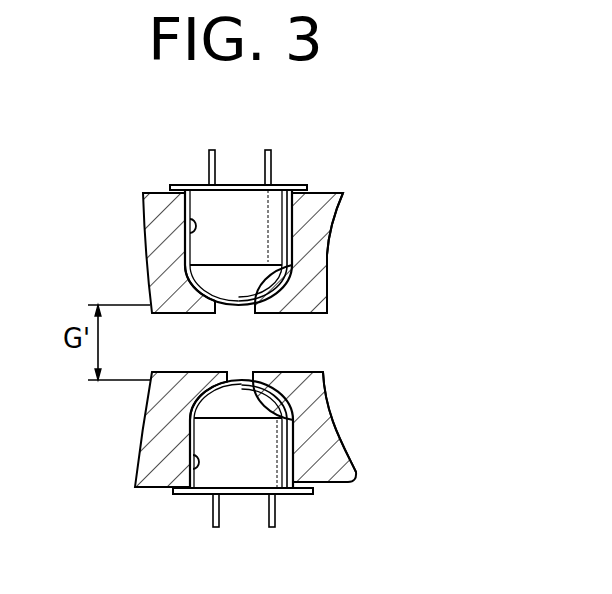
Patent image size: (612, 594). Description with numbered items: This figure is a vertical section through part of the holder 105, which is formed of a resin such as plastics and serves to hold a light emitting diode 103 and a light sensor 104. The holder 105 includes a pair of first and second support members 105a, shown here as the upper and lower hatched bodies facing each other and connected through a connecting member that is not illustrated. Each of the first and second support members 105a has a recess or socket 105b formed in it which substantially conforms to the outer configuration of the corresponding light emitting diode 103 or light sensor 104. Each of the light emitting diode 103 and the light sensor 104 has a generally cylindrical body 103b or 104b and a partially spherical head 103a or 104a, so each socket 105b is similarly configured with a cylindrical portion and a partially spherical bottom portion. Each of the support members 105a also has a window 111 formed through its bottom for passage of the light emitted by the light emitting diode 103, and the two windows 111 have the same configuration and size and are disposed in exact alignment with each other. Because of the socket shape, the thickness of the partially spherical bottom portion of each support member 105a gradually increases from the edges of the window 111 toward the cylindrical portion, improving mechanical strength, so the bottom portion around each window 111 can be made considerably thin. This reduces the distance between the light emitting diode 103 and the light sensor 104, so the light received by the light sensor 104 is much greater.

The light emitting diode 103 is at (288, 183).
The partially spherical head 103a is at (263, 283).
The generally cylindrical body 103b is at (272, 212).
The light sensor 104 is at (197, 497).
The partially spherical head 104a is at (215, 402).
The generally cylindrical body 104b is at (282, 434).
The holder 105 is at (356, 170).
The first and second support members 105a is at (325, 250).
The recess or socket 105b is at (184, 240).
The window 111 is at (228, 372).